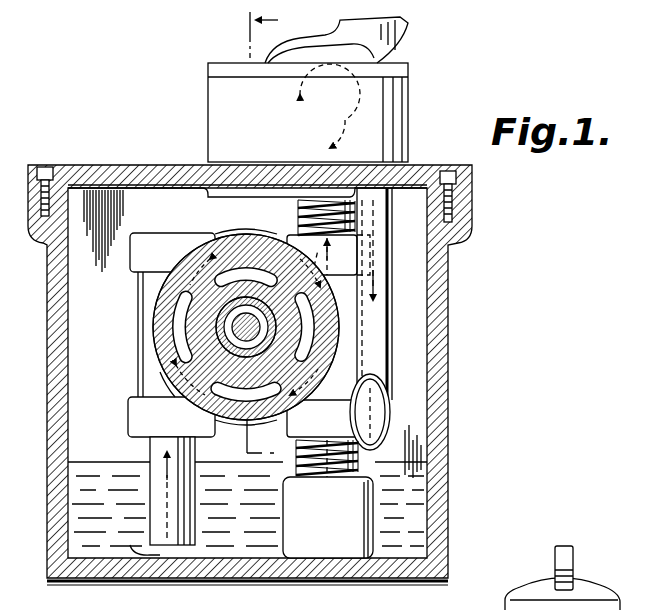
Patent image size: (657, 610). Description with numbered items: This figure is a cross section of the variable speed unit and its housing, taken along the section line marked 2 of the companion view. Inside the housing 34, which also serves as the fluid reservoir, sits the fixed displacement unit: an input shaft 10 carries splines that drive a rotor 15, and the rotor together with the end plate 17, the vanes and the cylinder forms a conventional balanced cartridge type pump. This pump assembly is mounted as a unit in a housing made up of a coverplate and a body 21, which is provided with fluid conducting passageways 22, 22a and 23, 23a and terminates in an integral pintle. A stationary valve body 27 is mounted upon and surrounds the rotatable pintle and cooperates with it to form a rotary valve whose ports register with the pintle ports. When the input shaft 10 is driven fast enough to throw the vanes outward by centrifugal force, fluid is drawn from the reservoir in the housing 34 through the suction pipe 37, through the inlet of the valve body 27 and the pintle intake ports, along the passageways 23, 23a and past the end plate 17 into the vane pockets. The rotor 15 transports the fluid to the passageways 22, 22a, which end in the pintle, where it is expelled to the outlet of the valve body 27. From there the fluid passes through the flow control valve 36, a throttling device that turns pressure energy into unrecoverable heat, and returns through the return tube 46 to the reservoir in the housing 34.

The section line 2- 2 is at (274, 33).
The input shaft 10 is at (230, 310).
The rotor 15 is at (200, 345).
The end plate 17 is at (240, 319).
The body 21 is at (352, 383).
The fluid conducting passageway 22 is at (250, 274).
The fluid conducting passageway 22a is at (243, 400).
The fluid conducting passageway 23 is at (170, 372).
The fluid conducting passageway 23a is at (310, 340).
The valve body 27 is at (136, 412).
The housing 34 is at (137, 576).
The flow control valve 36 is at (406, 108).
The suction pipe 37 is at (150, 478).
The return tube 46 is at (383, 290).